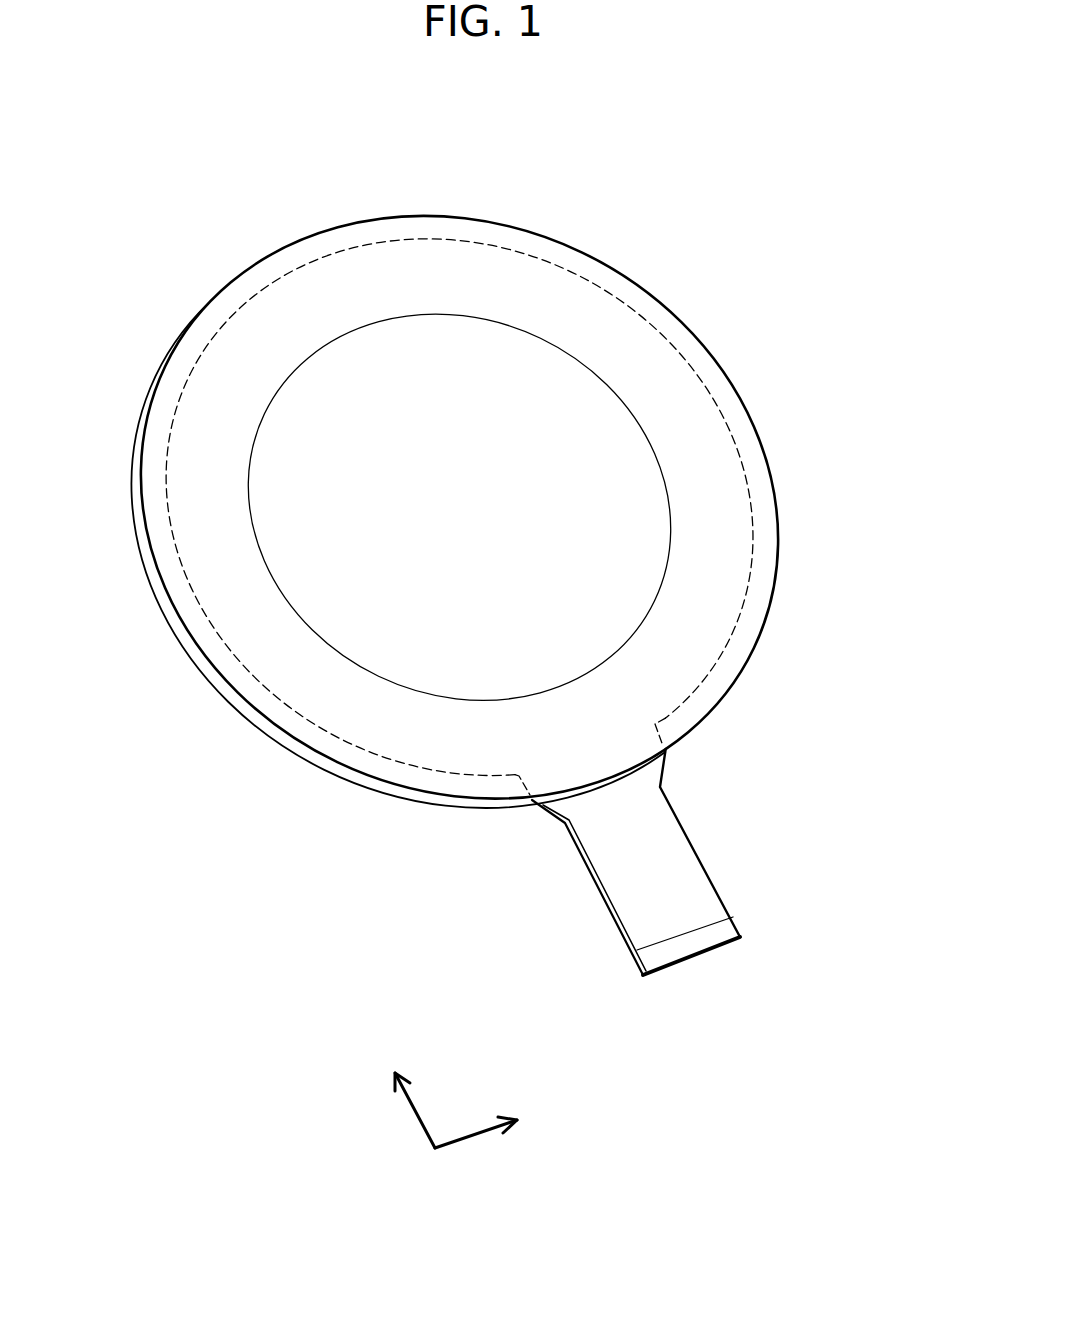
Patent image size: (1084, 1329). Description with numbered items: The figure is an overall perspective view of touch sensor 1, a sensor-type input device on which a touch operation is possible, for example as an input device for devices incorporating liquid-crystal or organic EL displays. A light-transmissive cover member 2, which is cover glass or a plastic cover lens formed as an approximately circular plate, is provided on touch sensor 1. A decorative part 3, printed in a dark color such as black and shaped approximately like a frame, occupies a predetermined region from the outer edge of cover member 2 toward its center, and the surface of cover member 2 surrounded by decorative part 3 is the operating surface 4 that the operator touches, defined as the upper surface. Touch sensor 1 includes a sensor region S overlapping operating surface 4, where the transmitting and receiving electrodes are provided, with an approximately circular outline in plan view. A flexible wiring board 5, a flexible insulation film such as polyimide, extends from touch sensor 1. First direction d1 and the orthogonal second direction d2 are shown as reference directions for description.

The touch sensor 1 is at (459, 543).
The sensor region S is at (459, 507).
The cover member 2 is at (459, 507).
The decorative part 3 is at (620, 342).
The operating surface 4 is at (613, 452).
The flexible wiring board 5 is at (697, 862).
The first direction d1 is at (415, 1112).
The second direction d2 is at (472, 1137).